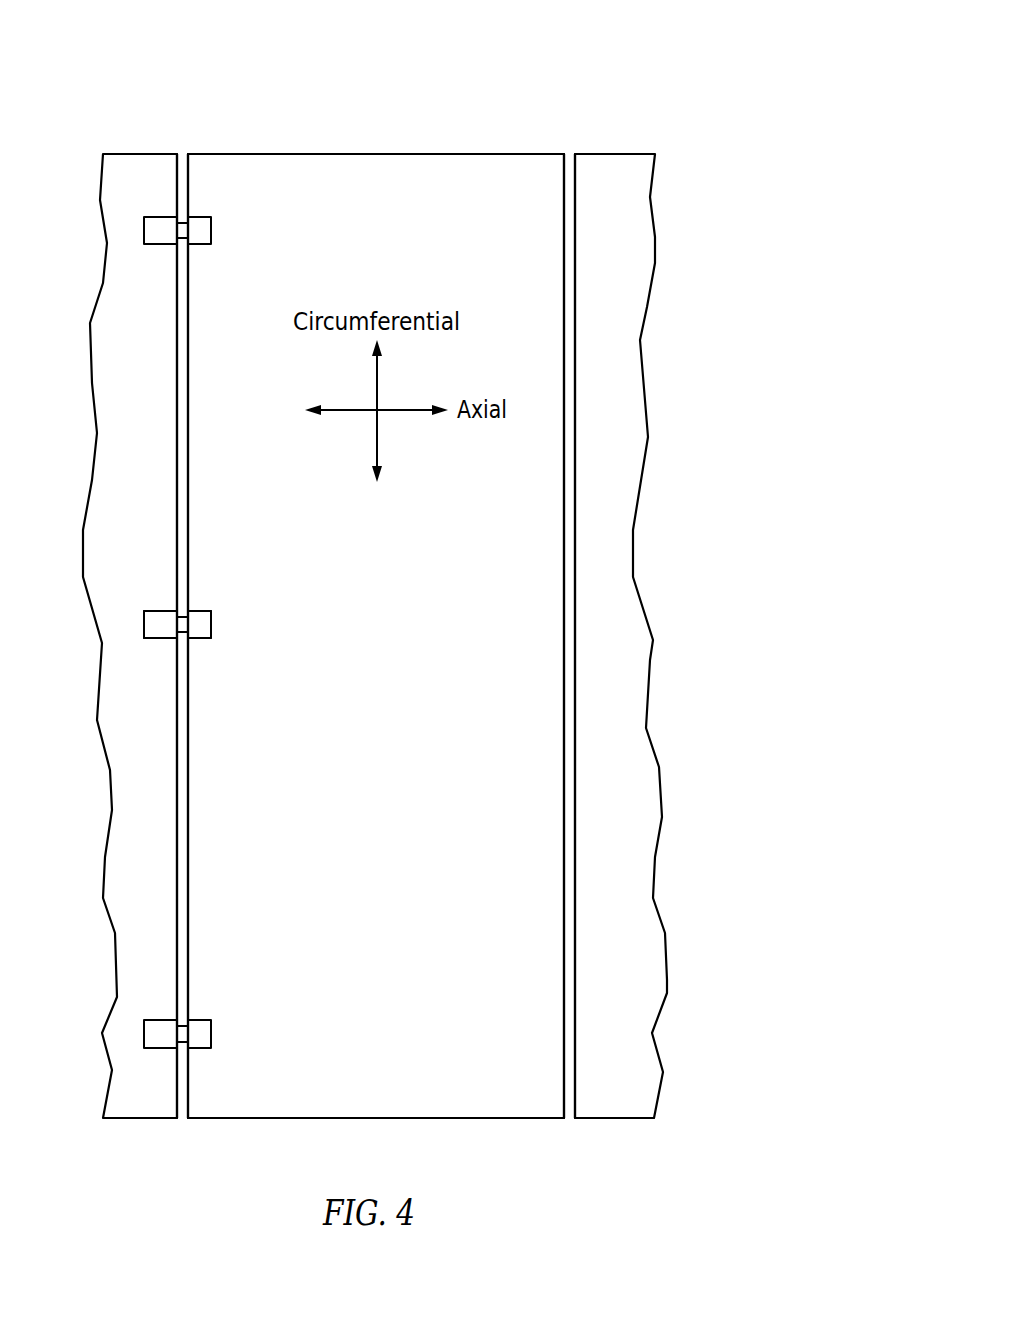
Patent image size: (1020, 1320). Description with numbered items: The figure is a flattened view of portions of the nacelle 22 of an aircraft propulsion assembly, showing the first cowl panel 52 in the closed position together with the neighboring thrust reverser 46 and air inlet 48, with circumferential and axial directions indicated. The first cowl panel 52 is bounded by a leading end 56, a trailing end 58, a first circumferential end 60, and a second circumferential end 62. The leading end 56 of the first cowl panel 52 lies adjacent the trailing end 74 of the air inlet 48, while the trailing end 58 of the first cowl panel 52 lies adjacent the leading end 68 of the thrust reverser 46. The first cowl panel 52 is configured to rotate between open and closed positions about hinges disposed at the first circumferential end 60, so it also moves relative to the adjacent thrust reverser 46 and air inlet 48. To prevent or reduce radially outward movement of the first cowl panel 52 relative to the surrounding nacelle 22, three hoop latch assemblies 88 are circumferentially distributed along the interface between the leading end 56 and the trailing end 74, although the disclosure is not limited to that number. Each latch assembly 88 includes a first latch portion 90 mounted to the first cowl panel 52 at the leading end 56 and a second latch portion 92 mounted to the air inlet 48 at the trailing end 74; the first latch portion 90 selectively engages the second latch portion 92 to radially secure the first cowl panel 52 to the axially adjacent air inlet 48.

The nacelle 22 is at (662, 51).
The thrust reverser 46 is at (615, 318).
The air inlet 48 is at (117, 345).
The first cowl panel 52 is at (383, 193).
The leading end 56 is at (190, 356).
The trailing end 58 is at (562, 210).
The first circumferential end 60 is at (267, 153).
The second circumferential end 62 is at (483, 1120).
The leading end 68 is at (577, 250).
The trailing end 74 is at (177, 327).
The hoop latch assembly 88 is at (158, 198).
The first latch portion 90 is at (206, 623).
The second latch portion 92 is at (152, 625).